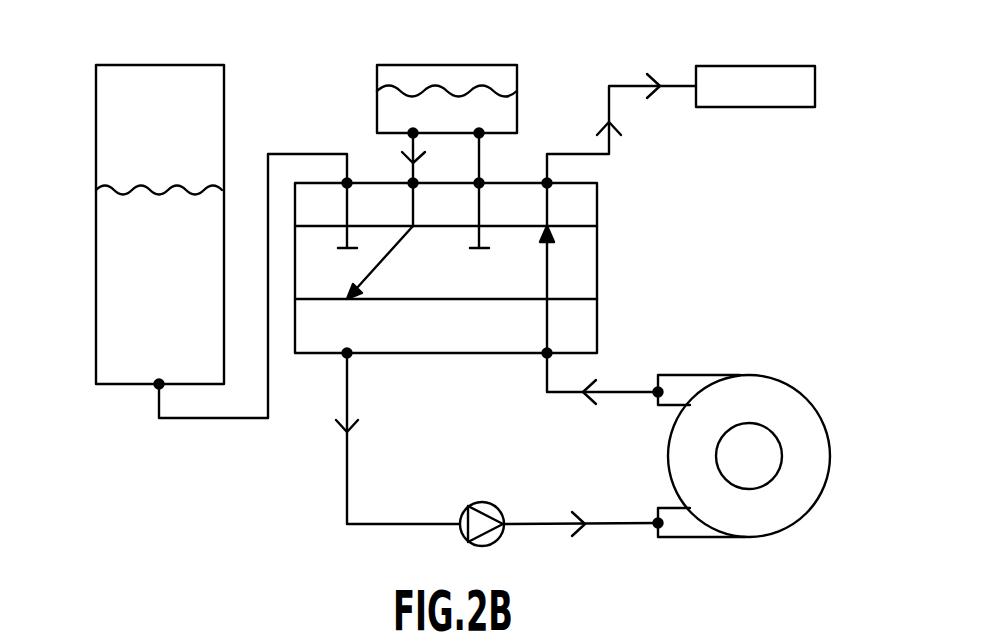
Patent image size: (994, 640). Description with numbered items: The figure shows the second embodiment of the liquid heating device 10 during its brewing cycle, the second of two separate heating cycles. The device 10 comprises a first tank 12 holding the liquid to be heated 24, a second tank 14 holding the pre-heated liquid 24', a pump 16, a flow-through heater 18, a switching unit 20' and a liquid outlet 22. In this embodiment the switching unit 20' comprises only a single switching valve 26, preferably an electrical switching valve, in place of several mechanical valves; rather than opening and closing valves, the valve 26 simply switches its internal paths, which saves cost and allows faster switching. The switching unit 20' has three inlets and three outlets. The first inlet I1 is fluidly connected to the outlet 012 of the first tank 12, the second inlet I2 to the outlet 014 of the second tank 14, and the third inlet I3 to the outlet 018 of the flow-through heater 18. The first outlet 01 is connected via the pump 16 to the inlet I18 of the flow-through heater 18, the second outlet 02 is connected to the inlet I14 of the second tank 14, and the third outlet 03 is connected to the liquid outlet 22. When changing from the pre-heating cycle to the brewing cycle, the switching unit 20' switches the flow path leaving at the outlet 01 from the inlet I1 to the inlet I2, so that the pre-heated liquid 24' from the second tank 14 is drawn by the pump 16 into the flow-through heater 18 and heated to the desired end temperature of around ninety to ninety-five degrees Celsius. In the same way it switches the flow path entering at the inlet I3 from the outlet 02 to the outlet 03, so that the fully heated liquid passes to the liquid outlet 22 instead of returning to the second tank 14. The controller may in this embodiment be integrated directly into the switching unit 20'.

The liquid heating device 10 is at (119, 41).
The first tank 12 is at (96, 293).
The second tank 14 is at (517, 110).
The pump 16 is at (485, 543).
The flow-through heater 18 is at (791, 402).
The switching unit 20' is at (491, 268).
The liquid outlet 22 is at (740, 78).
The liquid to be heated 24 is at (136, 223).
The pre-heated liquid 24' is at (412, 104).
The single switching valve 26 is at (597, 262).
The first outlet 01 is at (398, 437).
The second outlet 02 is at (496, 172).
The third outlet 03 is at (620, 131).
The outlet of the first tank 012 is at (233, 287).
The outlet of the second tank 014 is at (395, 156).
The outlet of the flow-through heater 018 is at (685, 405).
The first inlet I1 is at (358, 172).
The second inlet I2 is at (426, 172).
The third inlet I3 is at (601, 377).
The inlet of the second tank I14 is at (501, 156).
The inlet of the flow-through heater I18 is at (693, 537).